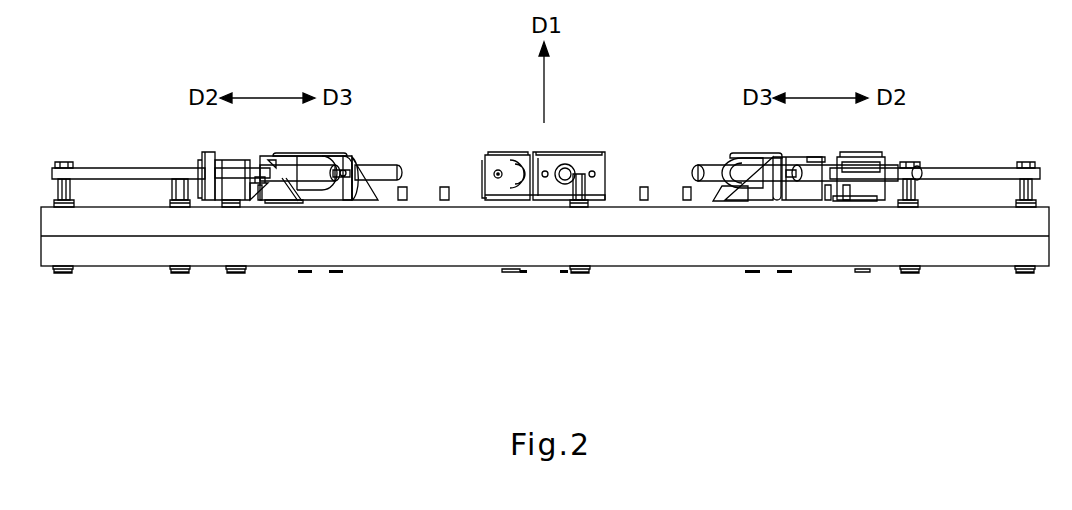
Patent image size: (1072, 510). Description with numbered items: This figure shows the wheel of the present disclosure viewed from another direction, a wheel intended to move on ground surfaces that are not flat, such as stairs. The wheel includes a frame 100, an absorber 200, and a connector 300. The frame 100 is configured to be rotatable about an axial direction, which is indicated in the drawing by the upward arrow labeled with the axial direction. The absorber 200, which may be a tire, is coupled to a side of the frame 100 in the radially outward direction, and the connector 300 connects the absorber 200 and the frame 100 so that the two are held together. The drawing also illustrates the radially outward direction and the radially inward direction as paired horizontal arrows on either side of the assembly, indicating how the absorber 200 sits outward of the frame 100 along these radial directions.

The frame 100 is at (424, 195).
The absorber 200 is at (425, 245).
The connector 300 is at (372, 150).